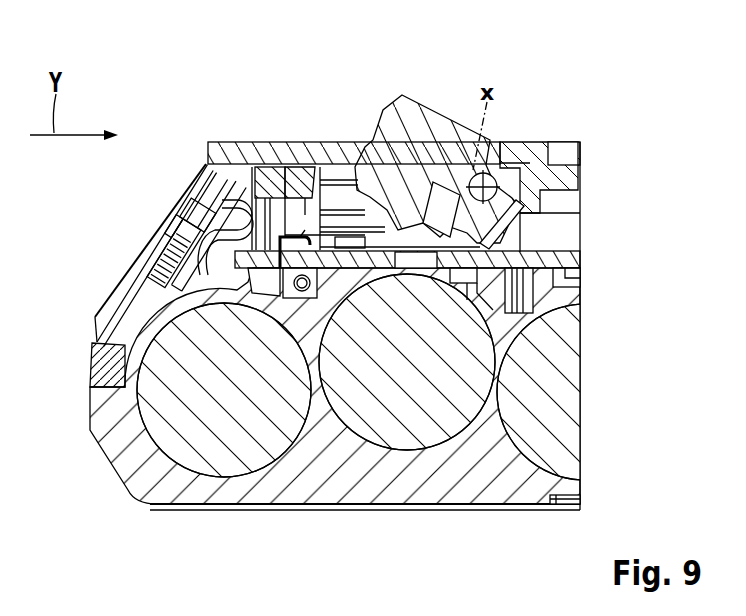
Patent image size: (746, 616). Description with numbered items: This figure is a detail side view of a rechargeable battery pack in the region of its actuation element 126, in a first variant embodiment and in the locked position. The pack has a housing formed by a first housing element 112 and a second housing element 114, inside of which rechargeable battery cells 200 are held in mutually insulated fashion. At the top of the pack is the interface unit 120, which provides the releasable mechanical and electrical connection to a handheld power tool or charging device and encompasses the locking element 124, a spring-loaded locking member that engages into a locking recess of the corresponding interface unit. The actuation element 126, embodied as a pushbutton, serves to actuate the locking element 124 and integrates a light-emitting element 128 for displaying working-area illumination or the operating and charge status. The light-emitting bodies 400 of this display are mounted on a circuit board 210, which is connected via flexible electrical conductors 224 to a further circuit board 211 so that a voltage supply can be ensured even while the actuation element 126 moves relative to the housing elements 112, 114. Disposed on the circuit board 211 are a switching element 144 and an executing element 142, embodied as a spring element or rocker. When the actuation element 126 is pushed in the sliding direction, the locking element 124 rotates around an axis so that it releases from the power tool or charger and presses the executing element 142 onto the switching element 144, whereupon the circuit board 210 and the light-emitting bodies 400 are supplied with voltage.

The interface unit 120 is at (146, 108).
The first housing element 112 is at (527, 148).
The second housing element 114 is at (176, 509).
The locking element 124 is at (392, 130).
The actuation element 126 is at (108, 312).
The light-emitting element 128 is at (163, 218).
The executing element 142 is at (281, 196).
The switching element 144 is at (333, 236).
The rechargeable battery cells 200 is at (241, 413).
The circuit board 210 is at (177, 200).
The further circuit board 211 is at (333, 262).
The electrical conductors 224 is at (219, 142).
The light-emitting bodies 400 is at (160, 246).